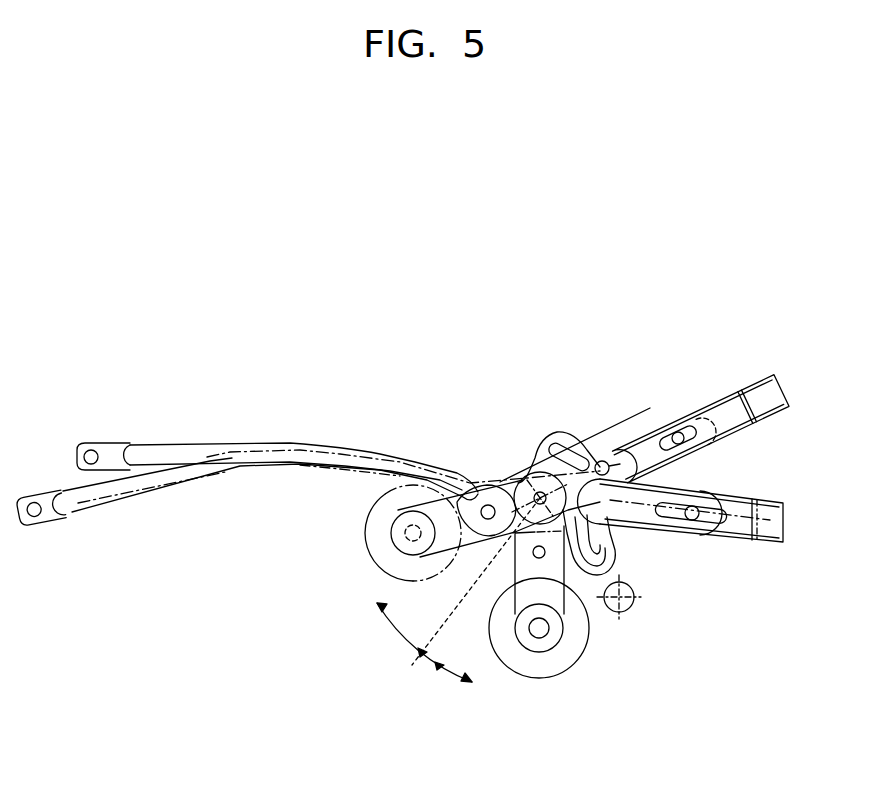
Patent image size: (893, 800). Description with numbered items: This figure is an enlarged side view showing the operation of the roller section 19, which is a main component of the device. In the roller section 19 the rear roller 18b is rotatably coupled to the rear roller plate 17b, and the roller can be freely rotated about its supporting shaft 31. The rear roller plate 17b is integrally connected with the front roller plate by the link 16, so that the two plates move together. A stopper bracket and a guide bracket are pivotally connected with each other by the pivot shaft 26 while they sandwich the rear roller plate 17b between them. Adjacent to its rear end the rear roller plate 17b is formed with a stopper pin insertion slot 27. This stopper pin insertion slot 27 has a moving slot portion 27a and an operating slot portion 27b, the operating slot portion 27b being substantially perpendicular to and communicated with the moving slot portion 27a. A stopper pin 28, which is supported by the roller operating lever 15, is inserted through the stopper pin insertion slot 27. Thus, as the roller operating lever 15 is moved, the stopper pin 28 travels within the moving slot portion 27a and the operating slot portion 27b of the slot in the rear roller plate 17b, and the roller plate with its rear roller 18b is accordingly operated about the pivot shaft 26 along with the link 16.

The roller operating lever 15 is at (790, 398).
The link 16 is at (287, 440).
The rear roller plate 17b is at (540, 498).
The rear roller 18b is at (540, 679).
The roller section 19 is at (627, 547).
The pivot shaft 26 is at (482, 480).
The stopper pin insertion slot 27 is at (578, 401).
The moving slot portion 27a is at (554, 438).
The operating slot portion 27b is at (607, 453).
The stopper pin 28 is at (616, 547).
The supporting shaft 31 is at (413, 533).